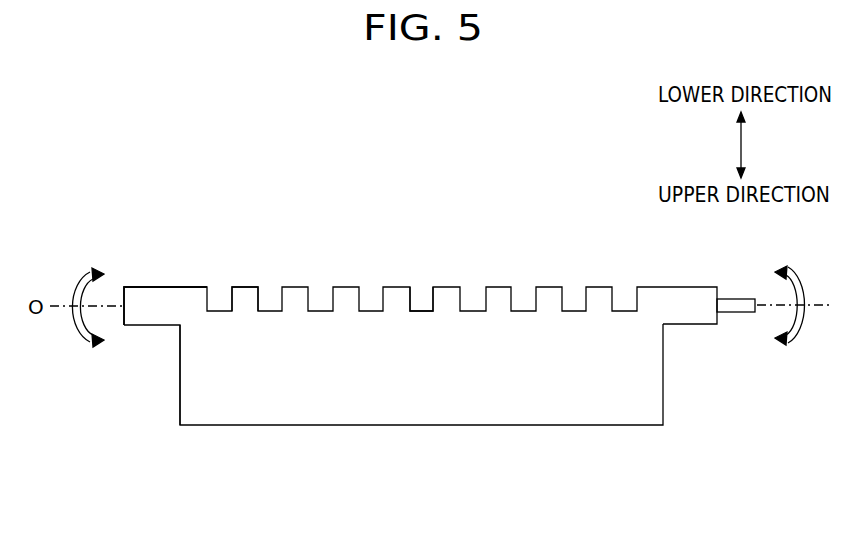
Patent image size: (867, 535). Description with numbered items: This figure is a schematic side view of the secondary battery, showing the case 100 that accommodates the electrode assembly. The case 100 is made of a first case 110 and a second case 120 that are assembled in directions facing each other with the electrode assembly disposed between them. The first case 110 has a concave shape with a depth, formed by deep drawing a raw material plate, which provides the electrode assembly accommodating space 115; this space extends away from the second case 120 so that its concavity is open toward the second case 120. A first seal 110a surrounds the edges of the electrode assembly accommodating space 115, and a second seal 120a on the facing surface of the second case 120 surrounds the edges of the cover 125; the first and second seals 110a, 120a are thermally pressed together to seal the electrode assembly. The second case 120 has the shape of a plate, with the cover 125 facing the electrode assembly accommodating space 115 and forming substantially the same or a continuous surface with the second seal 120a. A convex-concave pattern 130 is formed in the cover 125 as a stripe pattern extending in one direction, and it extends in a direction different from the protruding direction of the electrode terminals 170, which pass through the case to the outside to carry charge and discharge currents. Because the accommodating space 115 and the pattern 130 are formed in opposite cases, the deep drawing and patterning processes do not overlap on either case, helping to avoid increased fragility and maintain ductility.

The case 100 is at (422, 365).
The first case 110 is at (421, 385).
The first seal 110a is at (128, 230).
The electrode assembly accommodating space 115 is at (180, 386).
The second case 120 is at (400, 263).
The second seal 120a is at (152, 288).
The cover 125 is at (245, 288).
The convex-concave pattern 130 is at (422, 296).
The electrode terminals 170 is at (735, 312).